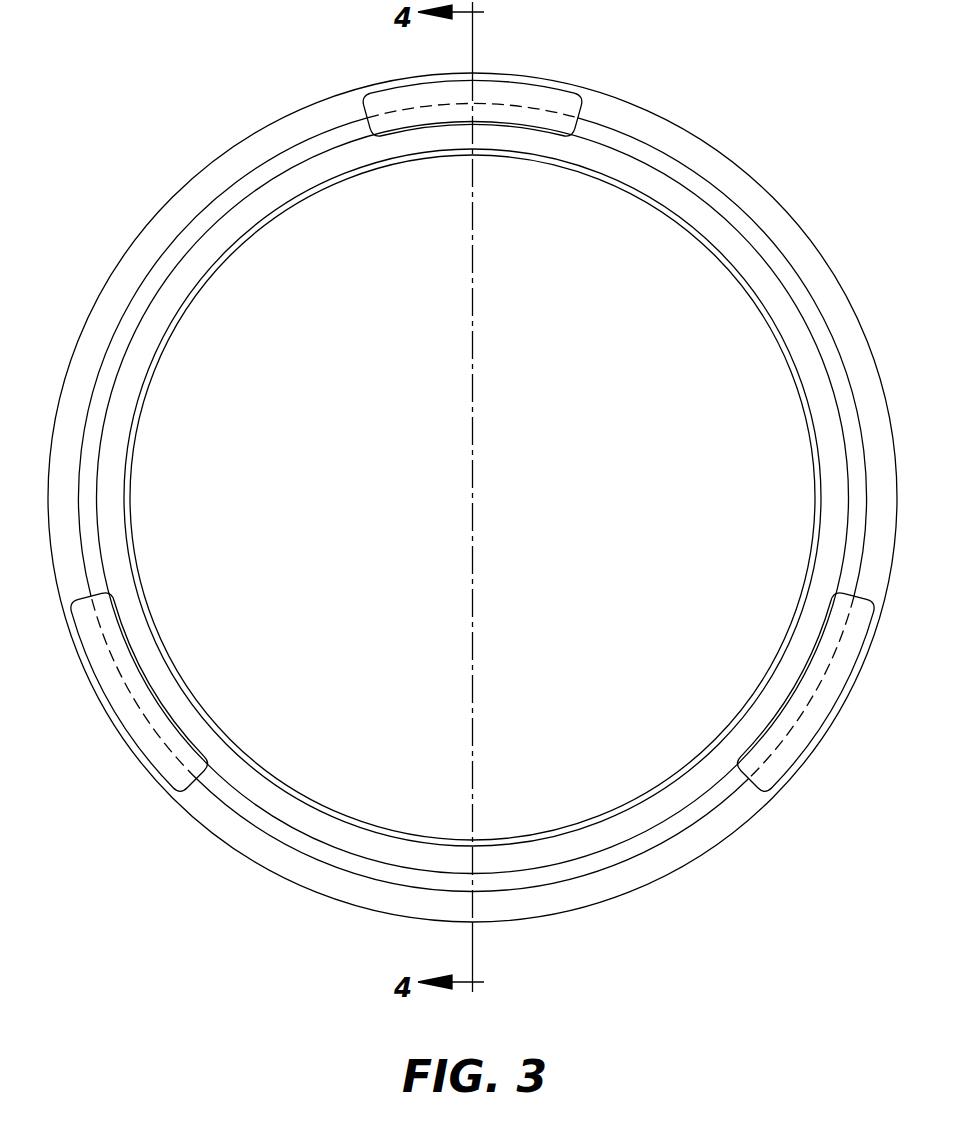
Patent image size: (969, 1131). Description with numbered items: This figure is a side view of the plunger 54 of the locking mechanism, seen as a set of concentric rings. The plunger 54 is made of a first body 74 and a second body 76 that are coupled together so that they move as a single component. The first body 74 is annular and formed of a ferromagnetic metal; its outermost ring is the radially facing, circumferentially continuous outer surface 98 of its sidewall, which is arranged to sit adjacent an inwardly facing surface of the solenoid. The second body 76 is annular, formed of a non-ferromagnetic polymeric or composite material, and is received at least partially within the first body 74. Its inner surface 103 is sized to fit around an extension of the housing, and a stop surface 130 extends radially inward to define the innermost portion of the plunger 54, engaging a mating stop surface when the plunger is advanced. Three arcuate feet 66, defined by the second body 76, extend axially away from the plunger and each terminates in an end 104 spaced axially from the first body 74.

The plunger 54 is at (752, 104).
The outer surface 98 is at (264, 128).
The first body 74 is at (328, 110).
The second body 76 is at (288, 163).
The inner surface 103 is at (163, 332).
The stop surface 130 is at (127, 452).
The feet 66 is at (570, 88).
The end 104 is at (518, 92).